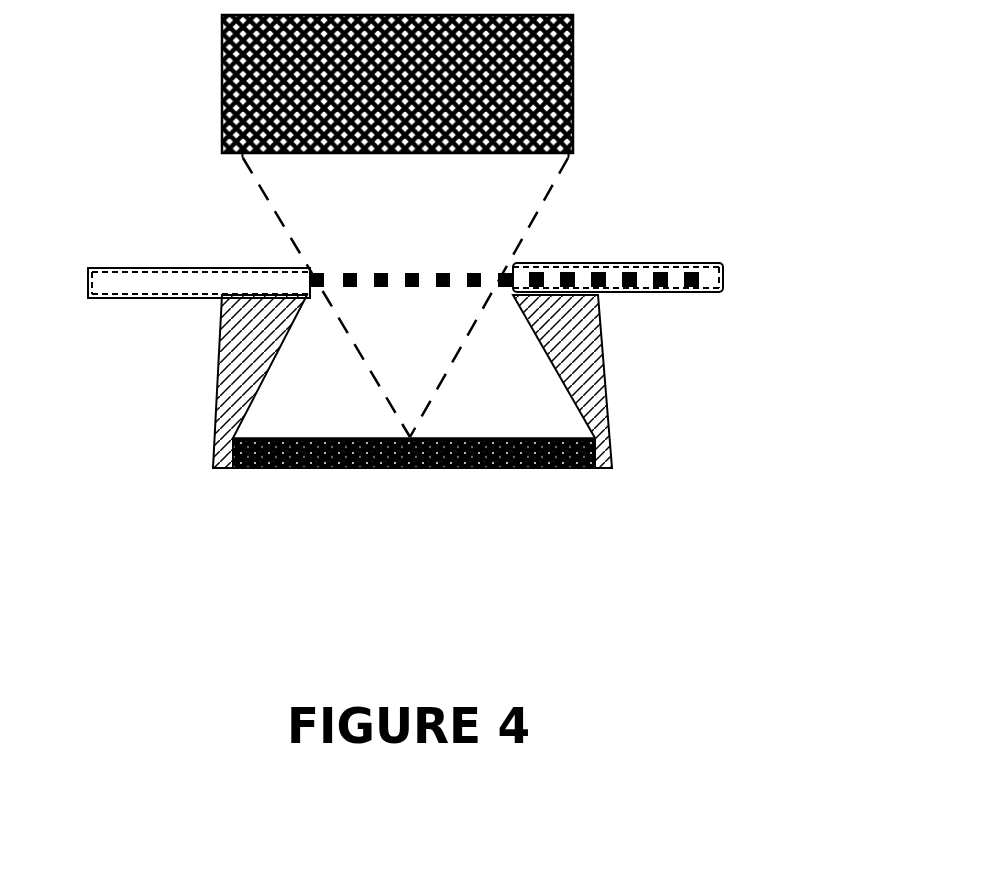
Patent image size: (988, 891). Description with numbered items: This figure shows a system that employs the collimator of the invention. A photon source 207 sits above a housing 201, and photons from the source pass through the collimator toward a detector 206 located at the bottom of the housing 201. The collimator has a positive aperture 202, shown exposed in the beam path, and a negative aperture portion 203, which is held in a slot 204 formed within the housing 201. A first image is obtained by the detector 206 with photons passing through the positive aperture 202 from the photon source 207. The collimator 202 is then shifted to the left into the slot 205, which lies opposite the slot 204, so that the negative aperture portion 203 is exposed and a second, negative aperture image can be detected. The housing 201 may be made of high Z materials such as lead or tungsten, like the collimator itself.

The housing 201 is at (624, 373).
The positive aperture 202 is at (504, 262).
The negative aperture portion 203 is at (726, 254).
The slot 204 is at (738, 290).
The slot 205 is at (123, 261).
The detector 206 is at (607, 448).
The photon source 207 is at (591, 57).